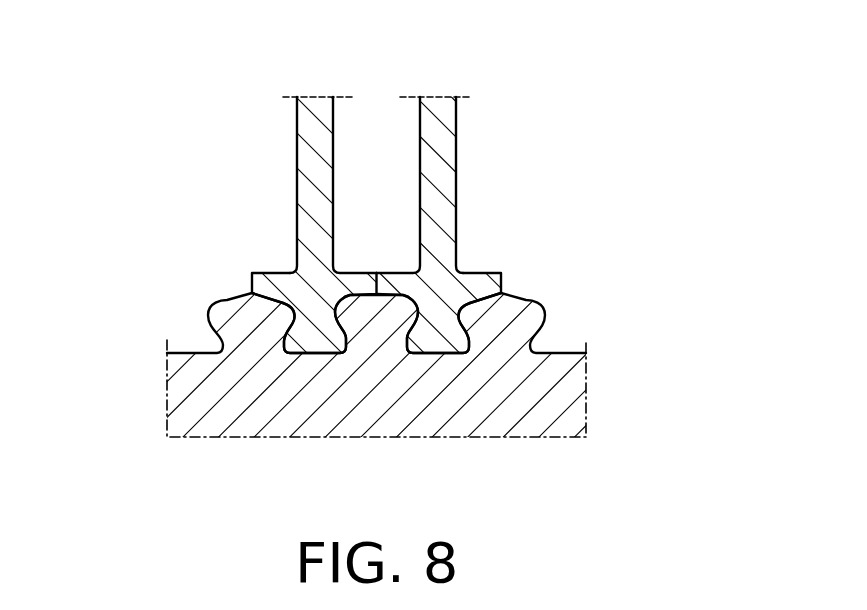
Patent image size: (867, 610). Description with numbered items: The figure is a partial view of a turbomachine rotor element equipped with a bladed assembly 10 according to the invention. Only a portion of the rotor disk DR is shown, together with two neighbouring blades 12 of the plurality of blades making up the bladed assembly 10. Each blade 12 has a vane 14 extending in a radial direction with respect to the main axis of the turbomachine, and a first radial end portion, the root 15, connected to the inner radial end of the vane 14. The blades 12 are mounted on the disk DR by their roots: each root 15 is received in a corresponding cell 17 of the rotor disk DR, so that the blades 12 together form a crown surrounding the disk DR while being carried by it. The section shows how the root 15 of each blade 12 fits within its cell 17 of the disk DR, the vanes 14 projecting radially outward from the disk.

The bladed assembly 10 is at (381, 263).
The blade 12 is at (268, 162).
The vane 14 is at (428, 138).
The first radial end portion (root) 15 is at (275, 278).
The cell 17 is at (310, 354).
The rotor disk DR is at (155, 393).